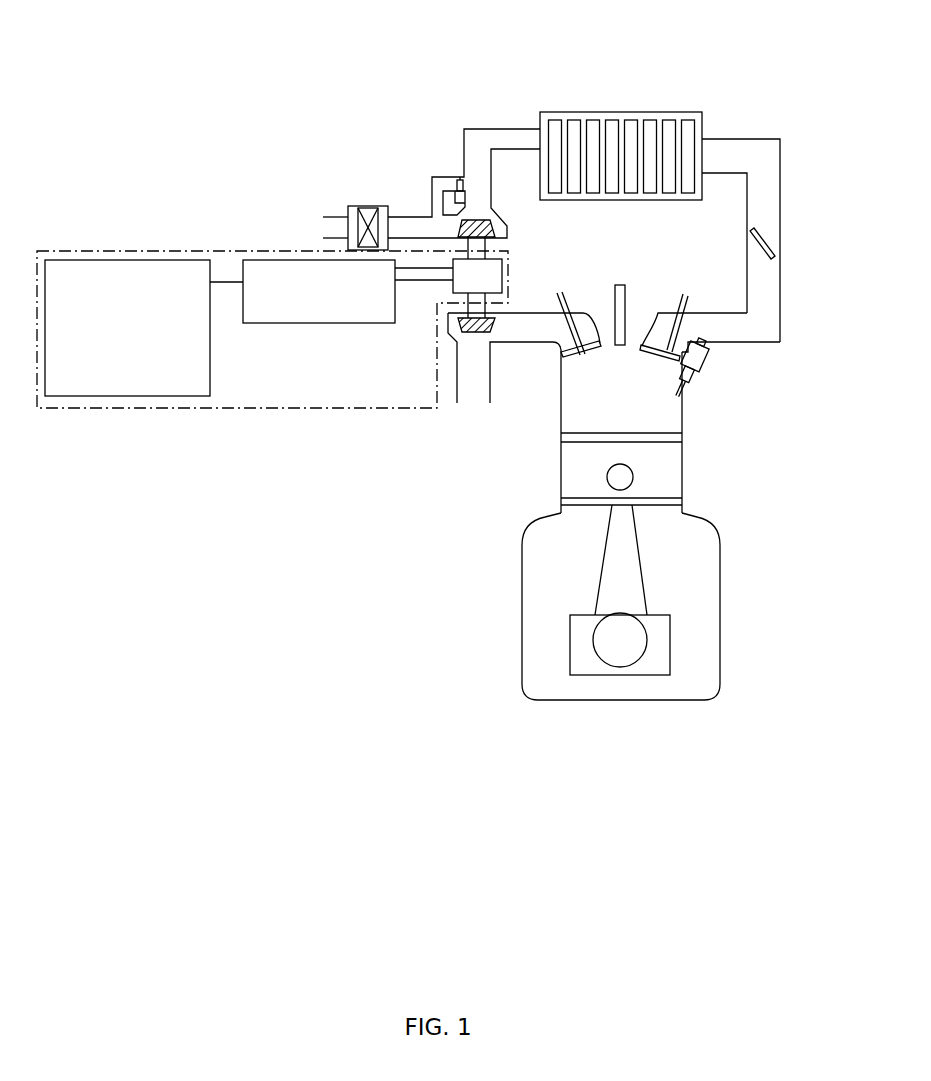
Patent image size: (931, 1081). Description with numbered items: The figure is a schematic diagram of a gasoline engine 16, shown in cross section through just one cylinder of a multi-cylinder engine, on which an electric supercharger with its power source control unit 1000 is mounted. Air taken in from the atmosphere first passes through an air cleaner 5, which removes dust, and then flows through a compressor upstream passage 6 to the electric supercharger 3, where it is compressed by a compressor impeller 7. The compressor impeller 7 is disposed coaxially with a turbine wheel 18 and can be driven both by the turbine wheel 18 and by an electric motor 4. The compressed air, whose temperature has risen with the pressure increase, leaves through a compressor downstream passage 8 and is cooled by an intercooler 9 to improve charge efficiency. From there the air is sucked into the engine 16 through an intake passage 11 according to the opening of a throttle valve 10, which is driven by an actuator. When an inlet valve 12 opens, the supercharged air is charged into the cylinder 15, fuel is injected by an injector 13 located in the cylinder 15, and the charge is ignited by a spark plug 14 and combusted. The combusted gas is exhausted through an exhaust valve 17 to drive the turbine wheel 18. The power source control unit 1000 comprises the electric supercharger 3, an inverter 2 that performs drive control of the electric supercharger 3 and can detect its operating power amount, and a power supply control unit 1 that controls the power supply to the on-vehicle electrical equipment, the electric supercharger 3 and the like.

The power supply control unit 1 is at (210, 350).
The inverter 2 is at (295, 323).
The electric supercharger 3 is at (512, 263).
The electric motor 4 is at (457, 287).
The air cleaner 5 is at (360, 207).
The intake pipe 6 is at (418, 222).
The compressor impeller 7 is at (497, 228).
The compressor downstream passage 8 is at (478, 175).
The intercooler 9 is at (637, 112).
The throttle valve 10 is at (767, 242).
The intake passage 11 is at (762, 333).
The inlet valve 12 is at (668, 310).
The injector 13 is at (703, 367).
The spark plug 14 is at (627, 285).
The cylinder 15 is at (658, 395).
The gasoline engine 16 is at (716, 485).
The exhaust valve 17 is at (556, 353).
The turbine wheel 18 is at (493, 328).
The power source control unit of an electric supercharger 1000 is at (143, 410).